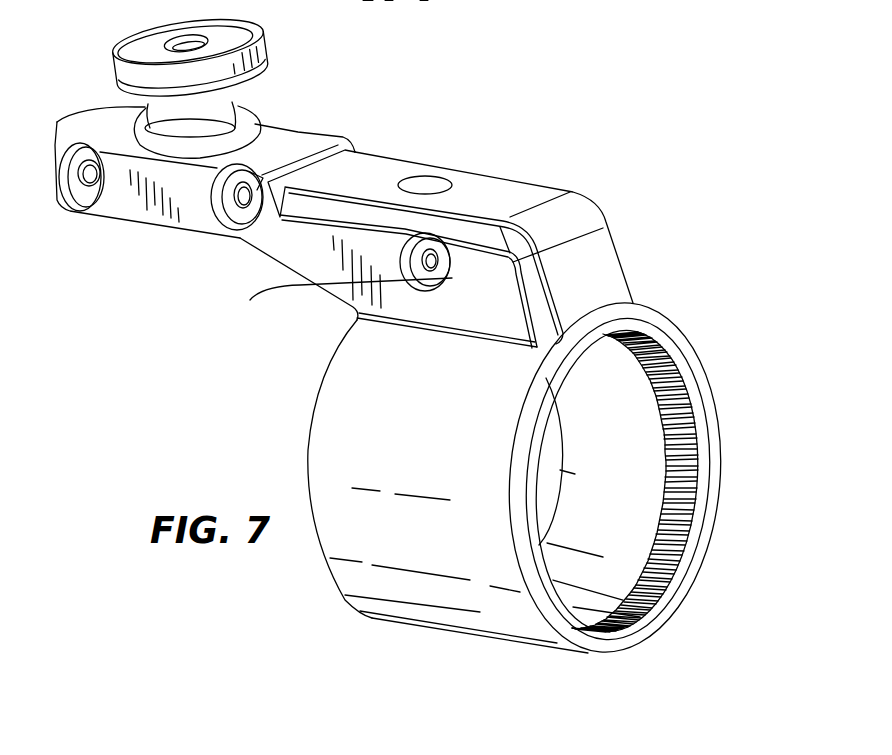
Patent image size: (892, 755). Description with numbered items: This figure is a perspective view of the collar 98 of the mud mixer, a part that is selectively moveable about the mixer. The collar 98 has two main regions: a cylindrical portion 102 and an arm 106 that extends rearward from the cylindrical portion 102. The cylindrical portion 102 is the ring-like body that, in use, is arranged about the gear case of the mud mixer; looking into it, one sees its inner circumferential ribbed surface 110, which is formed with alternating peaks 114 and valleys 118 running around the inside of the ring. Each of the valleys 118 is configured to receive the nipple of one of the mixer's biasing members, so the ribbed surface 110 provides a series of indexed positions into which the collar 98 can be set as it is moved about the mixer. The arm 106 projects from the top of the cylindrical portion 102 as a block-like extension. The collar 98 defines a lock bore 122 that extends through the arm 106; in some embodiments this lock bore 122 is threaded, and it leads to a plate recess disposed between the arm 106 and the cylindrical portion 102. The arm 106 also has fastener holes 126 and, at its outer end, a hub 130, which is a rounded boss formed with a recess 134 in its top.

The collar 98 is at (680, 179).
The cylindrical portion 102 is at (340, 462).
The arm 106 is at (130, 211).
The inner circumferential ribbed surface 110 is at (687, 577).
The peaks 114 is at (687, 537).
The valleys 118 is at (697, 467).
The lock bore 122 is at (432, 188).
The fastener holes 126 is at (239, 206).
The hub 130 is at (118, 71).
The recess 134 is at (178, 41).